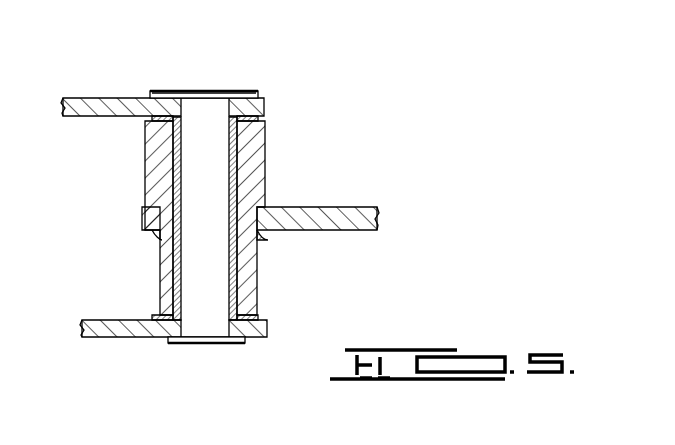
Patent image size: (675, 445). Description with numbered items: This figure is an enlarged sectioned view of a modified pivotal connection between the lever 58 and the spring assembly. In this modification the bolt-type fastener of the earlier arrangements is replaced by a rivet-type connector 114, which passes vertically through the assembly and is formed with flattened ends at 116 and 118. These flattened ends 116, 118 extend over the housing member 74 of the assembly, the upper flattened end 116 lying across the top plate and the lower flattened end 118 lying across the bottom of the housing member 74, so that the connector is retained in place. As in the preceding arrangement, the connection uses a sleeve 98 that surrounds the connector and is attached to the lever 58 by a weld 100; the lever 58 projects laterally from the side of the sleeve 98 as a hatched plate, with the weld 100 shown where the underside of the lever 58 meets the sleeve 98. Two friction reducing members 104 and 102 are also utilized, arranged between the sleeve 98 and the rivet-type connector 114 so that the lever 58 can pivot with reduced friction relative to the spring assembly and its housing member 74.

The rivet-type connector 114 is at (226, 88).
The flattened end 116 is at (255, 92).
The sleeve 98 is at (258, 150).
The lever 58 is at (364, 208).
The weld 100 is at (268, 238).
The friction reducing member 104 is at (170, 153).
The friction reducing member 102 is at (166, 273).
The housing member 74 is at (118, 338).
The flattened end 118 is at (245, 344).